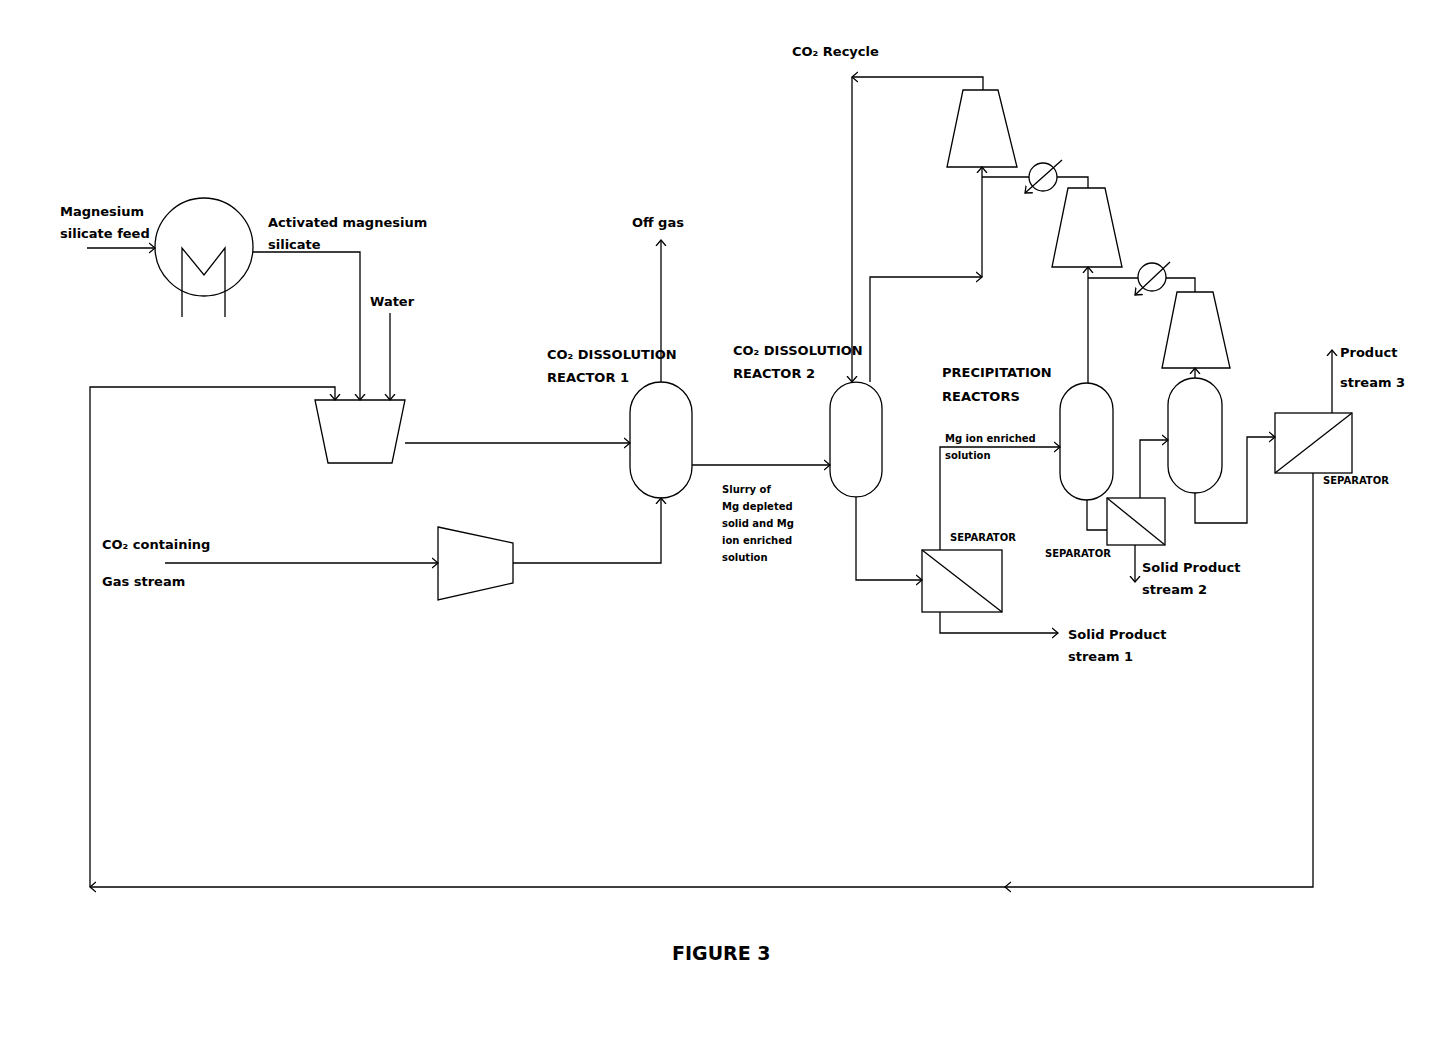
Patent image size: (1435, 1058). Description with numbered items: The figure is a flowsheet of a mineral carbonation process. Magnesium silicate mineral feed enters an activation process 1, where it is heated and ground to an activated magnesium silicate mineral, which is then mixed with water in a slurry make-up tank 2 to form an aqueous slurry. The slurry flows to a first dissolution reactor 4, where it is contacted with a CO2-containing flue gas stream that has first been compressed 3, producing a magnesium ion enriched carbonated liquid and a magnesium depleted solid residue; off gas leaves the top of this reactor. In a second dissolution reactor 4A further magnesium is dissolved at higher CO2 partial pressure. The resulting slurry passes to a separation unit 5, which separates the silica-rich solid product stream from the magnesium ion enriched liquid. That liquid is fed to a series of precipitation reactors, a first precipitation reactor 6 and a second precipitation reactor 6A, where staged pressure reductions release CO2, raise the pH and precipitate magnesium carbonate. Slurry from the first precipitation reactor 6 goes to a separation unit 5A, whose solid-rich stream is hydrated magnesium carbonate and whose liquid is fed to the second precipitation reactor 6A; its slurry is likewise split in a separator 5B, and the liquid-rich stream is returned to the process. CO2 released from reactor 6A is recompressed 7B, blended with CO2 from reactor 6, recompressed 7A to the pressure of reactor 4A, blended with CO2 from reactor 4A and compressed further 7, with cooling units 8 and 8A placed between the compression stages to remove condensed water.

The activation process 1 is at (204, 257).
The slurry make-up tank 2 is at (360, 431).
The compression 3 is at (475, 563).
The first dissolution reactor 4 is at (661, 440).
The second dissolution reactor 4A is at (856, 439).
The separation unit 5 is at (962, 581).
The separation unit 5A is at (1136, 521).
The separator 5B is at (1313, 443).
The first precipitation reactor 6 is at (1086, 441).
The second precipitation reactor 6A is at (1195, 435).
The compression stage 7 is at (982, 128).
The compression stage 7A is at (1087, 227).
The compression stage 7B is at (1196, 330).
The cooling unit 8 is at (1152, 278).
The cooling unit 8A is at (1043, 176).